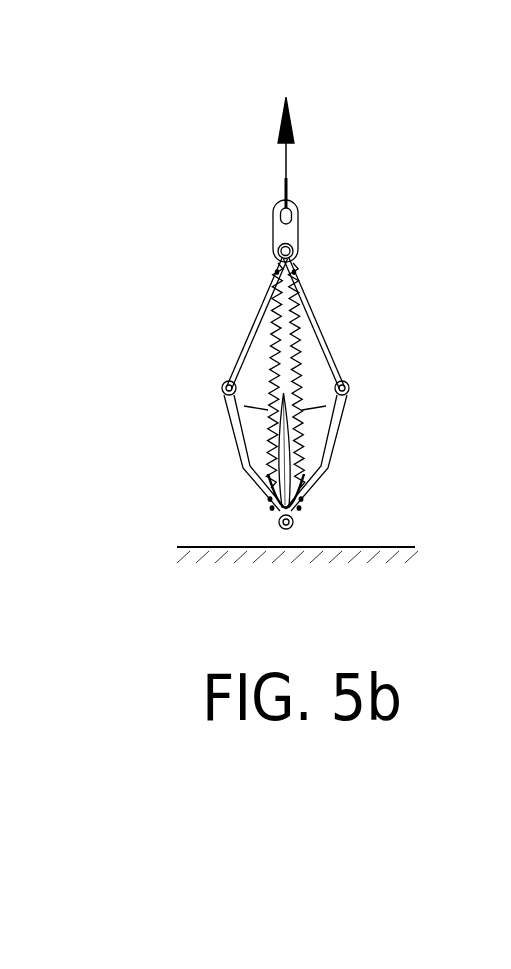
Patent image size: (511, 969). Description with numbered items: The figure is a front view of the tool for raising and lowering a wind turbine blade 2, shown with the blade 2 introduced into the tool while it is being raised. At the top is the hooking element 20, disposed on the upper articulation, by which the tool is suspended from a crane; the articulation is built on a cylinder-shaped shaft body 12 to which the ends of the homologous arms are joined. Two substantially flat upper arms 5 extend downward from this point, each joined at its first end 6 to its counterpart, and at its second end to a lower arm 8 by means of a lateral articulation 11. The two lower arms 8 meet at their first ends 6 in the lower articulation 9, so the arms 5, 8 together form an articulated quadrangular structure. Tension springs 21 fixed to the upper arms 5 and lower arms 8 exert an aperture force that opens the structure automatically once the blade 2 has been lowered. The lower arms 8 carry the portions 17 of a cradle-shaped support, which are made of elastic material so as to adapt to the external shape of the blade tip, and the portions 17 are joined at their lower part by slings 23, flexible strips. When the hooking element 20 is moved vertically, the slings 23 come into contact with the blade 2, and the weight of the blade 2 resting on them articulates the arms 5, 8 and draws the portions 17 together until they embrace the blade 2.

The wind turbine blade 2 is at (302, 493).
The upper arm 5 is at (263, 295).
The first end 6 is at (273, 508).
The lower arm 8 is at (253, 477).
The lower articulation 9 is at (280, 527).
The lateral articulation 11 is at (222, 392).
The shaft body 12 is at (288, 243).
The portion 17 is at (267, 436).
The hooking element 20 is at (292, 216).
The tension spring 21 is at (273, 360).
The sling 23 is at (298, 507).